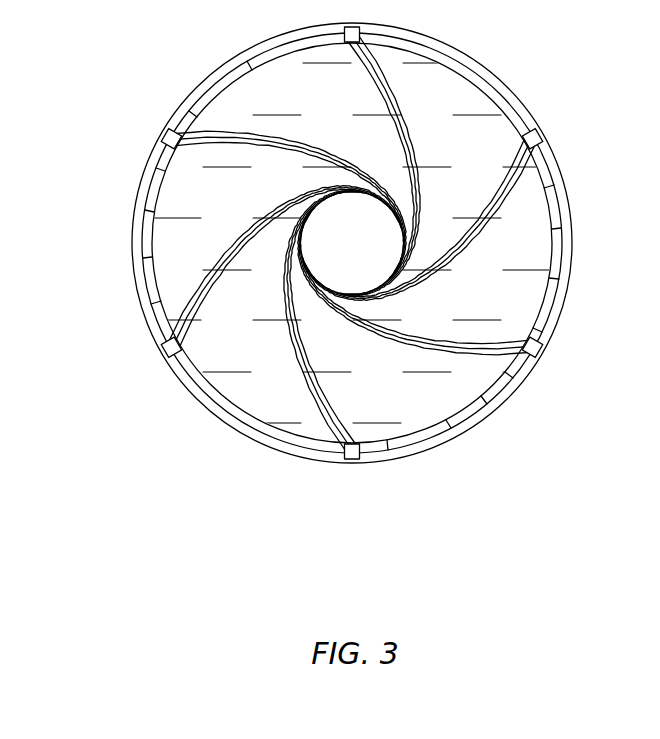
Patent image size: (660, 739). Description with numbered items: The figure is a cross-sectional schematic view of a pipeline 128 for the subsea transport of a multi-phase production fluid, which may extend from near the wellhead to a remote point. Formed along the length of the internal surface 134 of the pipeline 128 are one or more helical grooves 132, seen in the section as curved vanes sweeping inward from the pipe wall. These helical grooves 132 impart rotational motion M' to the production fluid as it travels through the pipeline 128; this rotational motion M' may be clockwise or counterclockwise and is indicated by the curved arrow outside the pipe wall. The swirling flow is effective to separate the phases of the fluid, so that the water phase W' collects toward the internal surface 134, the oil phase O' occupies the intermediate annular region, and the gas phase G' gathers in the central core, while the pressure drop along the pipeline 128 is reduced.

The pipeline 128 is at (187, 98).
The helical grooves 132 is at (173, 147).
The internal surface 134 is at (556, 297).
The water phase W' is at (209, 63).
The oil phase O' is at (332, 86).
The gas phase G' is at (353, 243).
The rotational motion M' is at (186, 374).